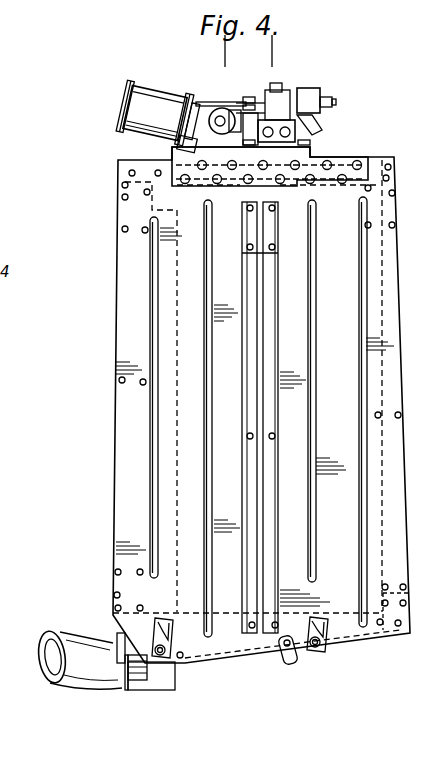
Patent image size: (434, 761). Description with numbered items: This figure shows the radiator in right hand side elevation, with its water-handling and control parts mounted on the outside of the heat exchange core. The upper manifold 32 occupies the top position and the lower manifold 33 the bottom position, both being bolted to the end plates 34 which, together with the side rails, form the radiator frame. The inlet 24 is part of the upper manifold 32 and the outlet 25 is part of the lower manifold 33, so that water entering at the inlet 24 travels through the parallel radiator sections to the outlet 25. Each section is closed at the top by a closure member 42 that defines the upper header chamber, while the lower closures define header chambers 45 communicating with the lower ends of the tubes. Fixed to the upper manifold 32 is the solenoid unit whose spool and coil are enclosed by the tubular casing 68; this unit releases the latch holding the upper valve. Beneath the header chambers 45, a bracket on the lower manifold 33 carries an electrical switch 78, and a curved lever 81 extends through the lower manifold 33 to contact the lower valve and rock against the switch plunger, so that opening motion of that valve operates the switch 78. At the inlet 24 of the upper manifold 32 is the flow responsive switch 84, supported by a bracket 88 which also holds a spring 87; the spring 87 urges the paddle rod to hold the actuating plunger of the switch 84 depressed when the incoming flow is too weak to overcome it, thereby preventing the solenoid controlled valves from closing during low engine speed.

The inlet 24 is at (122, 104).
The outlet 25 is at (62, 672).
The upper manifold 32 is at (231, 100).
The lower manifold 33 is at (168, 688).
The end plates 34 is at (127, 262).
The closure member 42 is at (318, 155).
The header chamber 45 is at (270, 658).
The tubular casing 68 is at (306, 93).
The electrical switch 78 is at (143, 682).
The curved lever 81 is at (122, 666).
The flow responsive switch 84 is at (251, 108).
The spring 87 is at (178, 143).
The bracket 88 is at (217, 104).